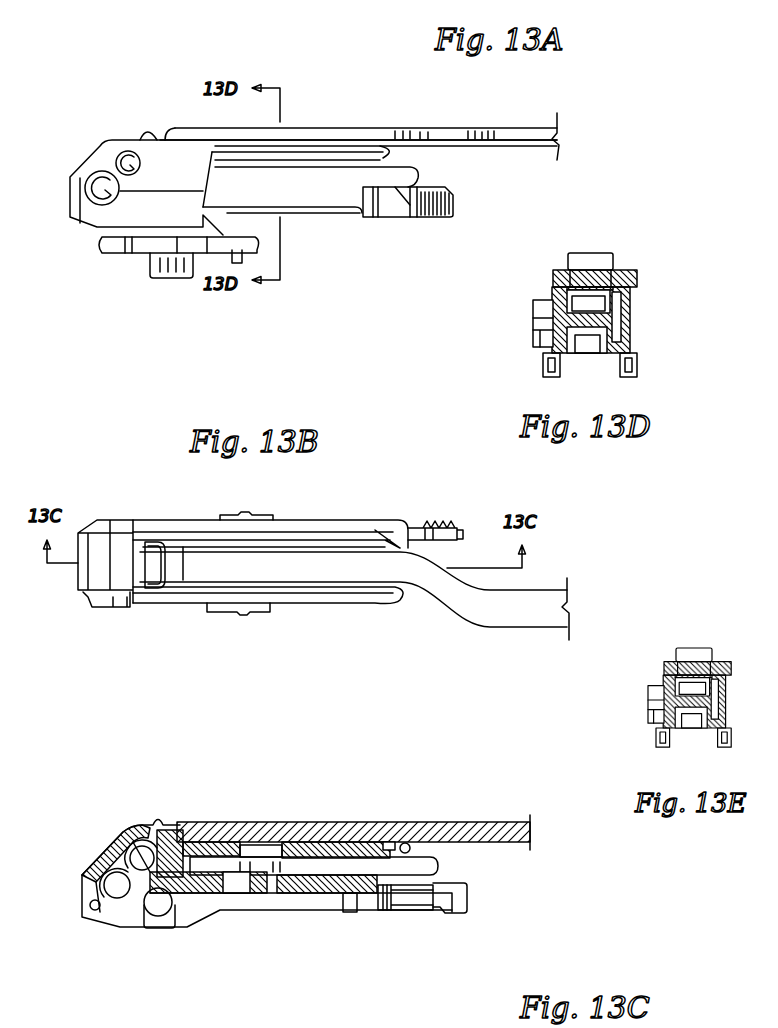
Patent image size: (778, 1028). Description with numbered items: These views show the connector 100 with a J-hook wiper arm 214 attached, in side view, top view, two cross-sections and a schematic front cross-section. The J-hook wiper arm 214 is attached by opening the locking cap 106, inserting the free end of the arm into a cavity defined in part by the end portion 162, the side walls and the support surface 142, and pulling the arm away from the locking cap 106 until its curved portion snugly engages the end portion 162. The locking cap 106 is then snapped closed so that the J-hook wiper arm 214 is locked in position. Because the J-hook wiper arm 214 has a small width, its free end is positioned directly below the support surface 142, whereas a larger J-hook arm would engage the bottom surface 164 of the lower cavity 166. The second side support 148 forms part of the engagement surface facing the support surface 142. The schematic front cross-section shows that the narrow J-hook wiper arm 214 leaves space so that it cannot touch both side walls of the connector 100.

In FIG. 13A, the connector 100 is at (390, 287).
In FIG. 13B, the connector 100 is at (307, 665).
In FIG. 13A, the locking cap 106 is at (93, 158).
In FIG. 13B, the locking cap 106 is at (80, 533).
In FIG. 13C, the locking cap 106 is at (108, 852).
In FIG. 13A, the support surface 142 is at (417, 177).
In FIG. 13C, the support surface 142 is at (438, 865).
In FIG. 13A, the second side support 148 is at (307, 150).
In FIG. 13C, the second side support 148 is at (370, 840).
In FIG. 13C, the end portion 162 is at (183, 843).
In FIG. 13C, the bottom surface 164 is at (340, 896).
In FIG. 13C, the lower cavity 166 is at (325, 903).
In FIG. 13A, the J-hook wiper arm 214 is at (463, 128).
In FIG. 13B, the J-hook wiper arm 214 is at (500, 624).
In FIG. 13C, the J-hook wiper arm 214 is at (303, 822).